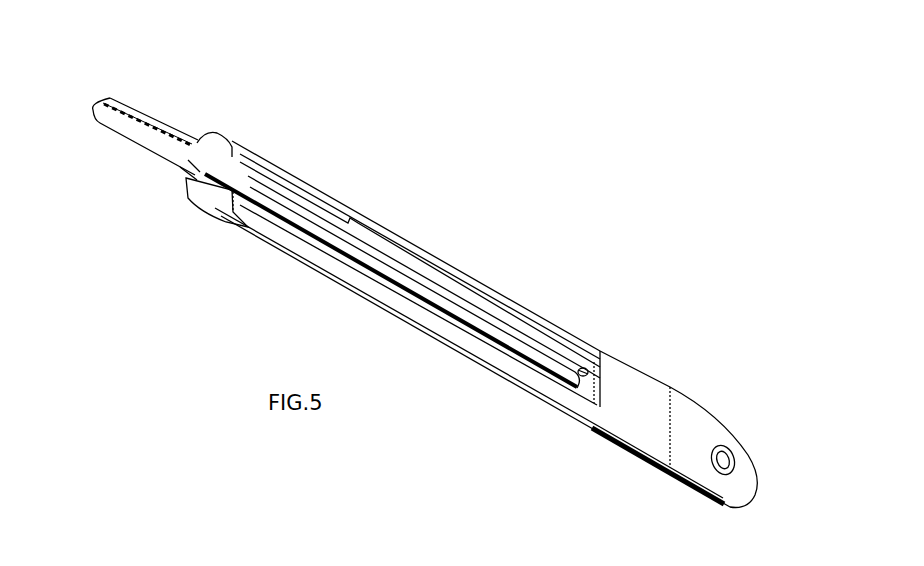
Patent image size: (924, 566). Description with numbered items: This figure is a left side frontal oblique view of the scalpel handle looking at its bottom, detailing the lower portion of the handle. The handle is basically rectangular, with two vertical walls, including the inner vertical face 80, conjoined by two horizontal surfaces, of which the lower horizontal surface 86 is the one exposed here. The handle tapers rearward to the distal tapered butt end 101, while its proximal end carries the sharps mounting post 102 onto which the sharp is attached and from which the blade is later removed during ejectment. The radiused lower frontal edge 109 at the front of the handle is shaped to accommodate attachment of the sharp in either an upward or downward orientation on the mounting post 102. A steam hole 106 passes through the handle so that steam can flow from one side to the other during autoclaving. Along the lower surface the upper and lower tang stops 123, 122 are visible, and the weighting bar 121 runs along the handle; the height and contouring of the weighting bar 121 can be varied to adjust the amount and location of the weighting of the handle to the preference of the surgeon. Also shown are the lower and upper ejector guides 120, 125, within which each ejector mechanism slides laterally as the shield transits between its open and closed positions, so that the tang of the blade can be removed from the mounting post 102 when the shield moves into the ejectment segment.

The inner vertical face 80 is at (383, 257).
The lower horizontal surface 86 is at (517, 380).
The distal tapered butt end 101 is at (700, 423).
The sharps mounting post 102 is at (125, 128).
The steam hole 106 is at (602, 357).
The lower frontal edge 109 is at (200, 208).
The lower ejector guide 120 is at (227, 177).
The weighting bar 121 is at (505, 337).
The lower tang stop 122 is at (263, 240).
The upper tang stop 123 is at (233, 133).
The upper ejector guide 125 is at (584, 368).